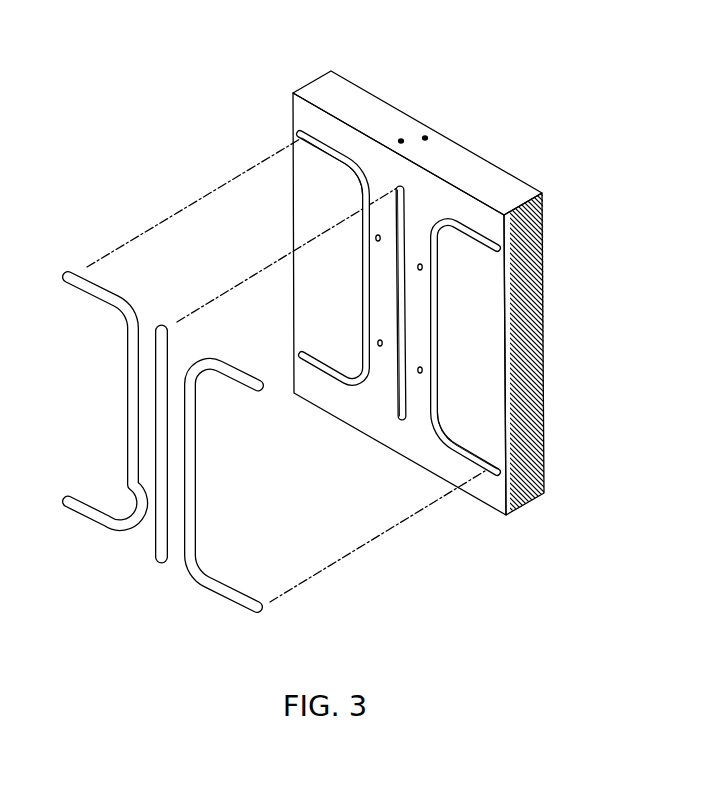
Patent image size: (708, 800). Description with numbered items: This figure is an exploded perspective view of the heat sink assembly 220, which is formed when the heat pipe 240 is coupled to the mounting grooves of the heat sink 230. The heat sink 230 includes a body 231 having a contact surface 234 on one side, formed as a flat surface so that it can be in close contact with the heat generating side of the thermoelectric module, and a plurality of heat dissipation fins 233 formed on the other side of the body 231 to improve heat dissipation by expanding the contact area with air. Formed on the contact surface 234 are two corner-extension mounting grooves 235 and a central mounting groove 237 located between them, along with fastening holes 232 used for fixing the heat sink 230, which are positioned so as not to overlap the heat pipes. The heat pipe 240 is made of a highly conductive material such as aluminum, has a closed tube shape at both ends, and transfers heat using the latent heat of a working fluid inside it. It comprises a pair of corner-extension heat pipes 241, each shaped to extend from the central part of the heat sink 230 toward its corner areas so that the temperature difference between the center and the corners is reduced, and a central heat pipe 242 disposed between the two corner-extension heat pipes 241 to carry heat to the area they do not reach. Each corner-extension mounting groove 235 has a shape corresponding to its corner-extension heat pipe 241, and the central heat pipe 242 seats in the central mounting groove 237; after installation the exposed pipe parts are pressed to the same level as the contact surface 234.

The heat sink assembly 220 is at (213, 31).
The heat sink 230 is at (442, 124).
The body 231 is at (388, 121).
The fastening hole 232 is at (440, 300).
The heat dissipation fins 233 is at (543, 271).
The contact surface 234 is at (483, 370).
The corner-extension mounting groove 235 is at (331, 134).
The central mounting groove 237 is at (400, 186).
The heat pipe 240 is at (91, 616).
The corner-extension heat pipe 241 is at (87, 521).
The central heat pipe 242 is at (158, 562).